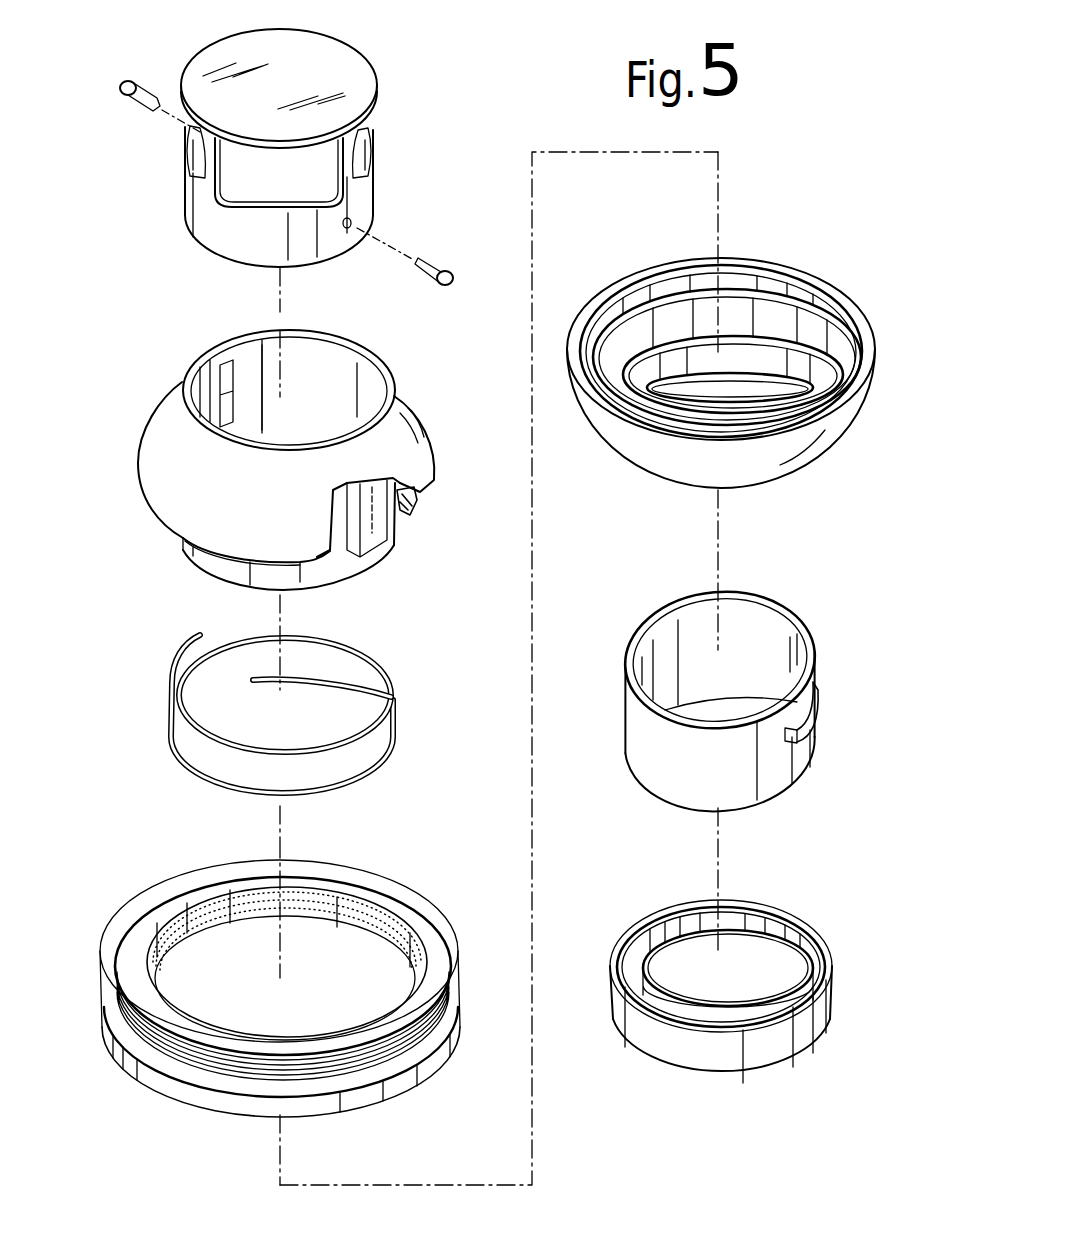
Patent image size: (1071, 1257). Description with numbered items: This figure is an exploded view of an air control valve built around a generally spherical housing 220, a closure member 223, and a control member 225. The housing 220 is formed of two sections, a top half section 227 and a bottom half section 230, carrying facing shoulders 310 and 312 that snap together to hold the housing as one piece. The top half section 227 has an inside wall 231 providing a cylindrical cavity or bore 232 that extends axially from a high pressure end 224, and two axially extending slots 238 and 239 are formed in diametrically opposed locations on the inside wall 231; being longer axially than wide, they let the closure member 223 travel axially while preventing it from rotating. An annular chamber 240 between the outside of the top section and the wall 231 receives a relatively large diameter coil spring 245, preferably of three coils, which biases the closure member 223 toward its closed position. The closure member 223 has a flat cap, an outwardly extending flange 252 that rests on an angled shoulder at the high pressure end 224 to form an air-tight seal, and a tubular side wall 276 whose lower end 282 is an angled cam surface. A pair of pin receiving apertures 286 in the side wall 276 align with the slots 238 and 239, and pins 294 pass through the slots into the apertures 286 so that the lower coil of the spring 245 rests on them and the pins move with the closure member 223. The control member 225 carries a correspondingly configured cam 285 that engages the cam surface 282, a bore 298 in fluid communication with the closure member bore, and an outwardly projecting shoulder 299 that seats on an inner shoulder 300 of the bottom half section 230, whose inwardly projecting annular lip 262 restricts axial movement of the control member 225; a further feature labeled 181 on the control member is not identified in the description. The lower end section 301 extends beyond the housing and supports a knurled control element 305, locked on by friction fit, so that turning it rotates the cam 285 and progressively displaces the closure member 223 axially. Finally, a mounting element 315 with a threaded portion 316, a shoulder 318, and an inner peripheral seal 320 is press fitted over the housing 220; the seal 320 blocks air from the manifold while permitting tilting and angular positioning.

The closure member 223 is at (344, 67).
The outwardly extending flange 252 is at (382, 95).
The tubular side wall 276 is at (212, 208).
The lower end cam surface 282 is at (238, 267).
The pin receiving apertures 286 is at (352, 224).
The pins 294 is at (142, 80).
The housing 220 is at (157, 468).
The high pressure end 224 is at (224, 347).
The inside wall 231 is at (317, 357).
The cylindrical cavity or bore 232 is at (333, 408).
The axially extending slot 238 is at (227, 390).
The top half section 227 is at (424, 409).
The annular chamber 240 is at (390, 500).
The axially extending slot 239 is at (357, 535).
The shoulder 310 is at (410, 522).
The coil spring 245 is at (401, 688).
The mounting element 315 is at (108, 983).
The threaded portion 316 is at (447, 993).
The inner peripheral seal 320 is at (333, 910).
The shoulder 318 is at (433, 1067).
The bottom half section 230 is at (827, 464).
The shoulder 312 is at (642, 290).
The inner shoulder 300 is at (755, 372).
The inwardly projecting annular lip 262 is at (776, 395).
The control member 225 is at (790, 765).
The cam 285 is at (787, 612).
The bore 298 is at (678, 632).
The lower end section 301 is at (685, 807).
The guide 181 is at (800, 692).
The outwardly projecting shoulder 299 is at (813, 723).
The knurled control element 305 is at (828, 1008).